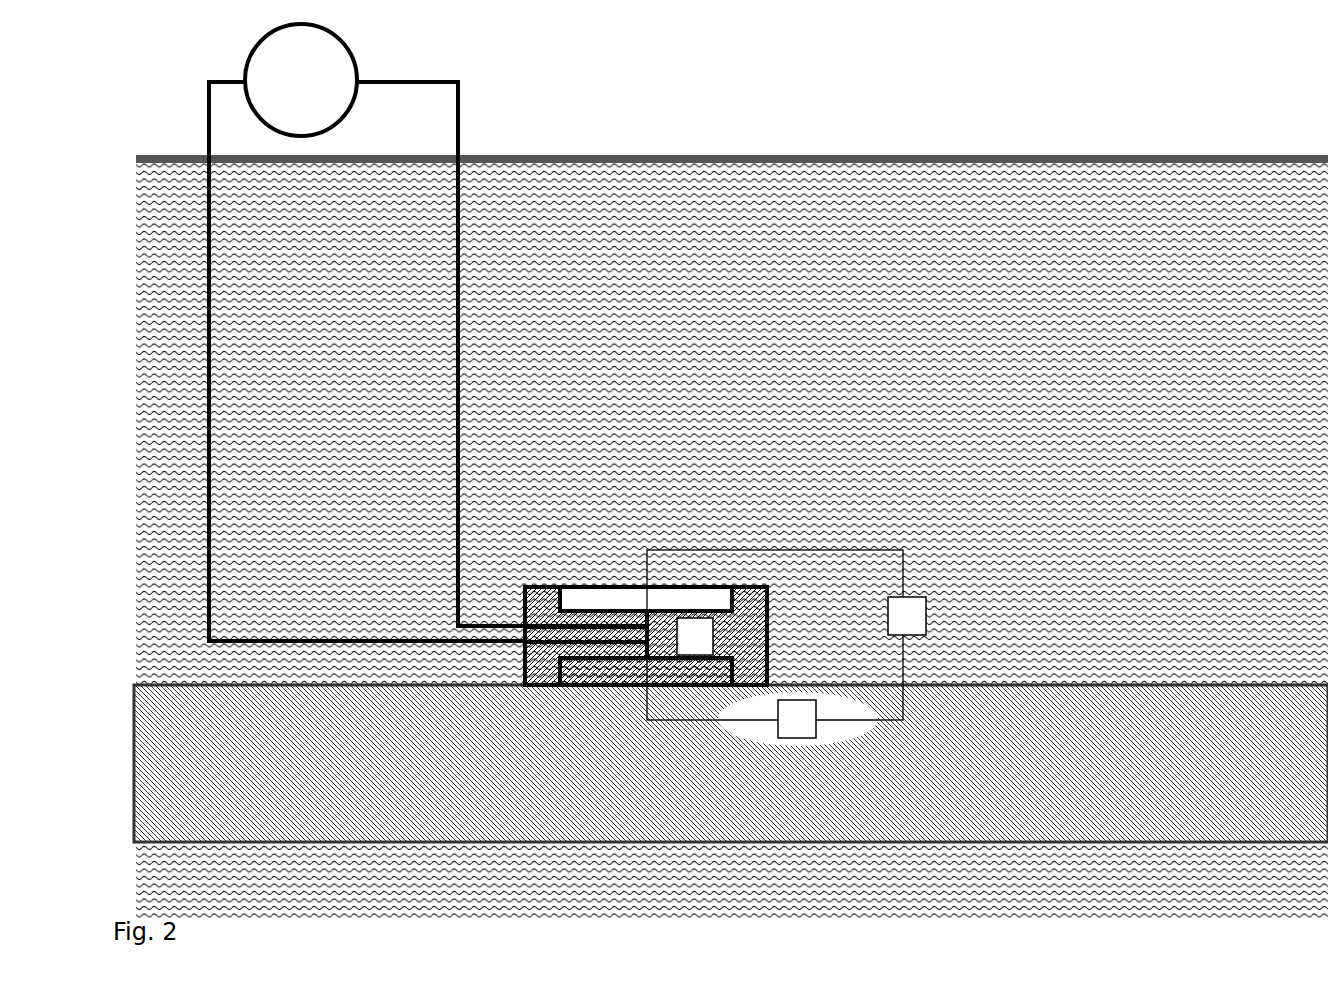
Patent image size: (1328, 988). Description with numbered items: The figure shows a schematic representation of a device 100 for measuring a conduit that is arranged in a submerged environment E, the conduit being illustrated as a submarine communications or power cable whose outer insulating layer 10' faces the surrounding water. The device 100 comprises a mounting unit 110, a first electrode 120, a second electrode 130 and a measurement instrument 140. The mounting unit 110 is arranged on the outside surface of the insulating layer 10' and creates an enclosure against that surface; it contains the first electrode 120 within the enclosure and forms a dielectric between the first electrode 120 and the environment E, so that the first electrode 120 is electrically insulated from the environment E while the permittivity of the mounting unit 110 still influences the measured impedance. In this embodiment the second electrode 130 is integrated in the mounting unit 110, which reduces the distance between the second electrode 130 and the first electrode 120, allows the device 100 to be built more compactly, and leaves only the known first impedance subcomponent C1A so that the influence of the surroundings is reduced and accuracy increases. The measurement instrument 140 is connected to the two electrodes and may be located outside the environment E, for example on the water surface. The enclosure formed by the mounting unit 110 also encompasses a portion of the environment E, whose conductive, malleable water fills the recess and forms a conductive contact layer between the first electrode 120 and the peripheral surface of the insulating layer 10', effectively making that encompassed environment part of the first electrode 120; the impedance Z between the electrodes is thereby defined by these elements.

The device 100 is at (545, 296).
The mounting unit 110 is at (547, 598).
The first electrode 120 is at (580, 668).
The second electrode 130 is at (708, 598).
The measurement instrument 140 is at (428, 332).
The insulating layer 10' is at (709, 741).
The first impedance subcomponent C1A is at (715, 636).
The environment E is at (732, 536).
The impedance Z is at (786, 648).